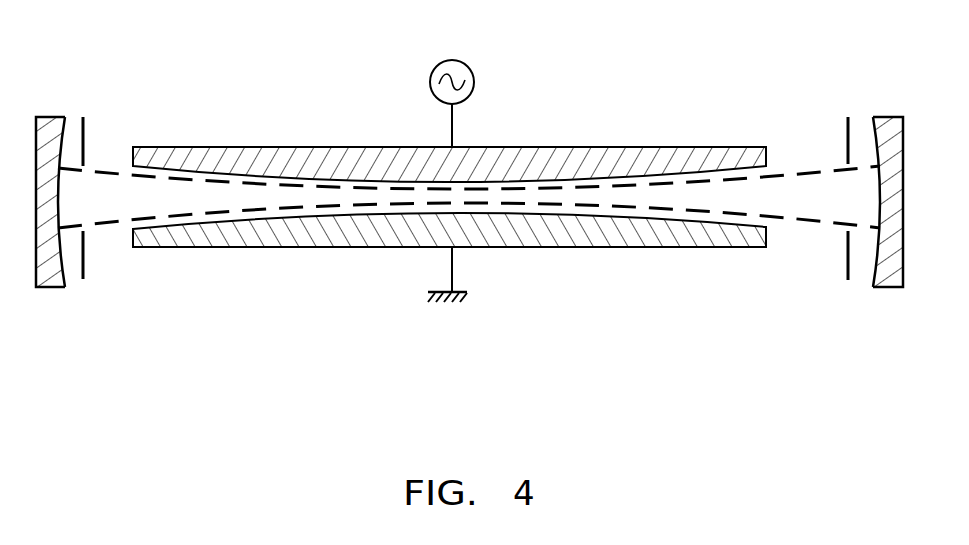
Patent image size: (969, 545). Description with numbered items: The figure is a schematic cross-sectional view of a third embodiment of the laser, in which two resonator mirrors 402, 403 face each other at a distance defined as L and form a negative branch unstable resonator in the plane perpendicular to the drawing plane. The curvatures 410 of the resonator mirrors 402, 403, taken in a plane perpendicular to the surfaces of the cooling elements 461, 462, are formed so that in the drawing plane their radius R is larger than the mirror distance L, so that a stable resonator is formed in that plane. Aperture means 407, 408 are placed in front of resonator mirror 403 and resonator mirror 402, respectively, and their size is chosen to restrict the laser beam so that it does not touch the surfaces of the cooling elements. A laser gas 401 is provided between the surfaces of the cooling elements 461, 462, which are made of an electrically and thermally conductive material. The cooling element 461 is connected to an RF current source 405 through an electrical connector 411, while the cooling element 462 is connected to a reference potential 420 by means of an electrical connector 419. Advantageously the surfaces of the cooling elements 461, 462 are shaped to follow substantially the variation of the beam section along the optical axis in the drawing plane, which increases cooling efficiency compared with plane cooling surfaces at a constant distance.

The laser gas 401 is at (265, 200).
The resonator mirror 402 is at (887, 288).
The resonator mirror 403 is at (50, 288).
The RF current source 405 is at (472, 72).
The aperture means 407 is at (83, 124).
The aperture means 408 is at (848, 125).
The curvatures of the resonator mirrors 410 is at (64, 126).
The electrical connector 411 is at (452, 125).
The electrical connector 419 is at (452, 271).
The reference potential 420 is at (447, 313).
The cooling element 461 is at (603, 153).
The cooling element 462 is at (583, 235).